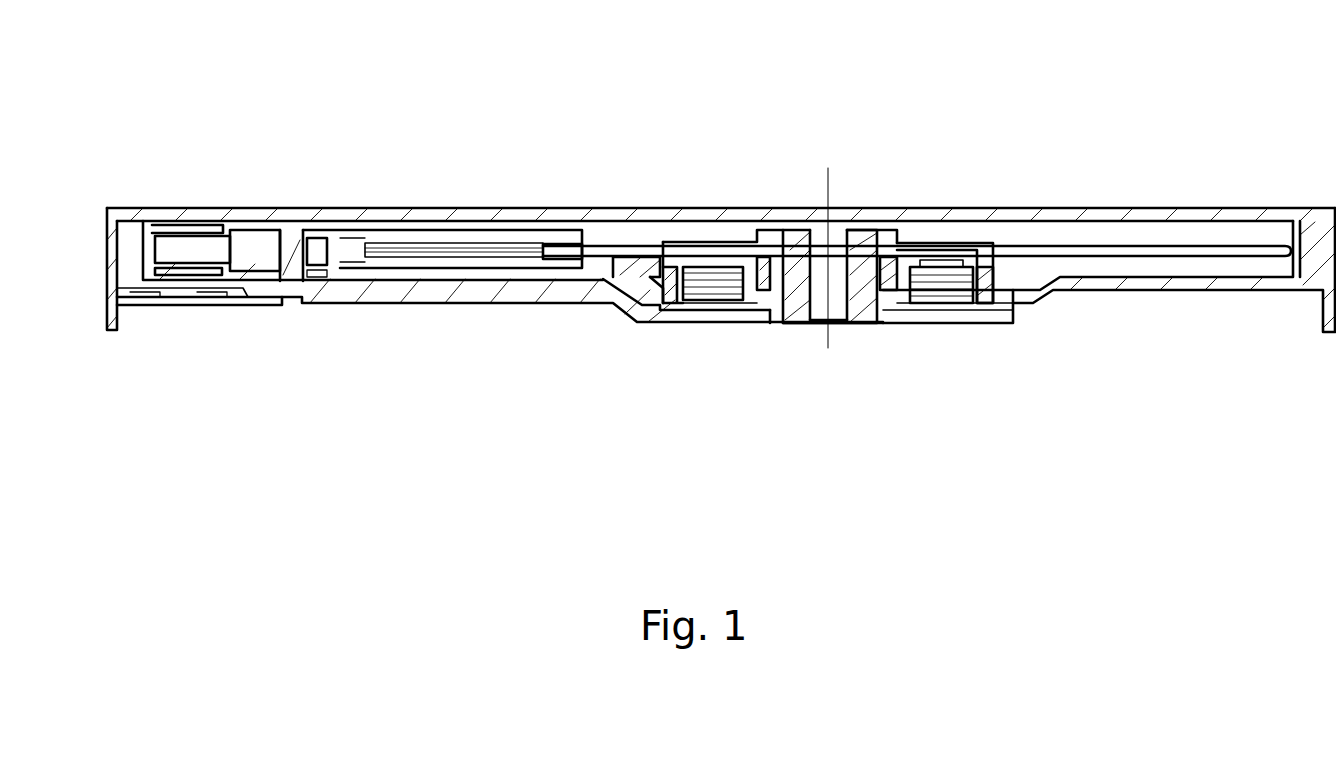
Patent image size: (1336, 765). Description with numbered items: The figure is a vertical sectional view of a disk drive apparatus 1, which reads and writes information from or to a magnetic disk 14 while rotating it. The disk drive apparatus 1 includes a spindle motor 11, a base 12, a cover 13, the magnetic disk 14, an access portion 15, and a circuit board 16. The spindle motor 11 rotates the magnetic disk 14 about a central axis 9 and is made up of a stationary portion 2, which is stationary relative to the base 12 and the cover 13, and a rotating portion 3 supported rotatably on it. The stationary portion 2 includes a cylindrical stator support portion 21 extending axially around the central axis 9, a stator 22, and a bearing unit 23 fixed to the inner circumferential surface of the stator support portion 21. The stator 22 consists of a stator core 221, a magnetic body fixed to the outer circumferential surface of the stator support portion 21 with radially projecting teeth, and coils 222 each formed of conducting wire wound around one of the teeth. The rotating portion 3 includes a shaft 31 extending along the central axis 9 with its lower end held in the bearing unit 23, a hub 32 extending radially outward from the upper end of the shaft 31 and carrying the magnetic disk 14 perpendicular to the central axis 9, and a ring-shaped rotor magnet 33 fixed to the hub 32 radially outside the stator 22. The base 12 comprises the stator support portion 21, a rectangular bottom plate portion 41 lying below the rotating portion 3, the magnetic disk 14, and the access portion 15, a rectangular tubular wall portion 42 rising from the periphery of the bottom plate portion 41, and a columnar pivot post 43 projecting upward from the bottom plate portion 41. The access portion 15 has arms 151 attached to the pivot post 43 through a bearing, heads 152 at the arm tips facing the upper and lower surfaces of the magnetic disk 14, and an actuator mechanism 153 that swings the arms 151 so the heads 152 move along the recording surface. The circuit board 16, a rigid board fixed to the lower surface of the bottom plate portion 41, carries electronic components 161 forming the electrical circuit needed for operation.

The disk drive apparatus 1 is at (412, 158).
The stationary portion 2 is at (973, 437).
The rotating portion 3 is at (1010, 150).
The central axis 9 is at (826, 185).
The spindle motor 11 is at (700, 221).
The base 12 is at (1130, 300).
The cover 13 is at (1085, 212).
The magnetic disk 14 is at (1175, 247).
The access portion 15 is at (488, 221).
The circuit board 16 is at (232, 306).
The stator support portion 21 is at (897, 325).
The stator 22 is at (1003, 397).
The bearing unit 23 is at (862, 330).
The shaft 31 is at (843, 222).
The hub 32 is at (924, 242).
The rotor magnet 33 is at (987, 250).
The bottom plate portion 41 is at (388, 305).
The wall portion 42 is at (118, 245).
The pivot post 43 is at (300, 238).
The arm 151 is at (486, 272).
The head 152 is at (559, 268).
The actuator mechanism 153 is at (195, 222).
The electronic component 161 is at (210, 306).
The stator core 221 is at (940, 305).
The coil 222 is at (965, 305).